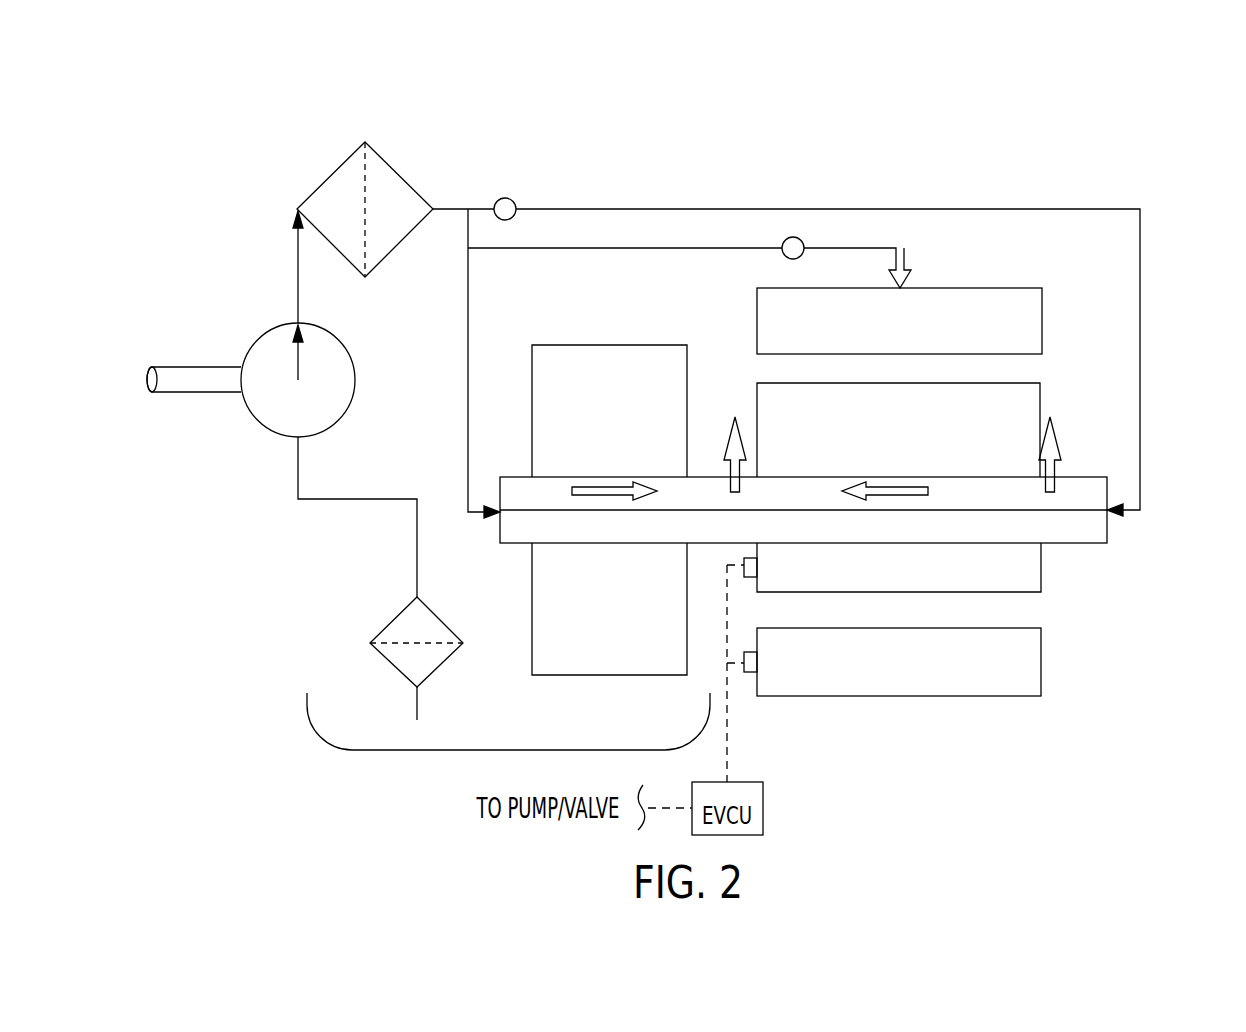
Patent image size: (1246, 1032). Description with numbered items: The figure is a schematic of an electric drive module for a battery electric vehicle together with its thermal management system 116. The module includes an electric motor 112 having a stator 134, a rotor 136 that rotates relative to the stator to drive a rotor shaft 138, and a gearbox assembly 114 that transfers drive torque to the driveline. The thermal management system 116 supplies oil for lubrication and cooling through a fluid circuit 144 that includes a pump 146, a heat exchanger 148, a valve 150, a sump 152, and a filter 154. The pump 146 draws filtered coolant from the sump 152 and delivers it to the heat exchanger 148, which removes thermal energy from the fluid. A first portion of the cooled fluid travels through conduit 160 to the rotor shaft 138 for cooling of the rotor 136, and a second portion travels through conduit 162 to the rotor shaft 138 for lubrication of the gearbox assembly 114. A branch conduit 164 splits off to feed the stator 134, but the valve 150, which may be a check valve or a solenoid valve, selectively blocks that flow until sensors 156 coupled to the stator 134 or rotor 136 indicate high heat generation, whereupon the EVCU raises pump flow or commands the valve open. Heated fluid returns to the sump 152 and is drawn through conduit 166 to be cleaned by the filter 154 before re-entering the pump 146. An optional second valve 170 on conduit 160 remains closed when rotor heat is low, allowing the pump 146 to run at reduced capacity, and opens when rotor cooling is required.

The electric motor 112 is at (1080, 626).
The gearbox assembly 114 is at (608, 345).
The thermal management system 116 is at (1158, 126).
The stator 134 is at (1042, 296).
The rotor 136 is at (1041, 563).
The rotor shaft 138 is at (1095, 523).
The fluid circuit 144 is at (812, 185).
The pump 146 is at (353, 372).
The heat exchanger 148 is at (330, 178).
The valve 150 is at (788, 238).
The sump 152 is at (309, 718).
The filter 154 is at (392, 626).
The sensor 156 is at (757, 562).
The conduit 160 is at (562, 207).
The conduit 162 is at (468, 438).
The branch conduit 164 is at (505, 250).
The conduit 166 is at (350, 500).
The second valve 170 is at (507, 198).